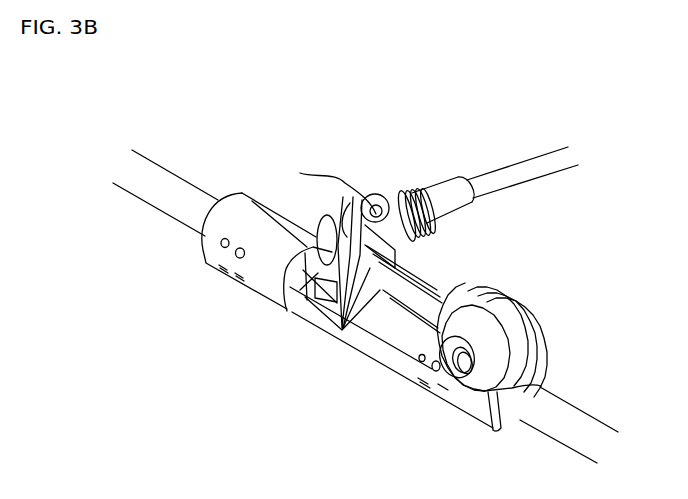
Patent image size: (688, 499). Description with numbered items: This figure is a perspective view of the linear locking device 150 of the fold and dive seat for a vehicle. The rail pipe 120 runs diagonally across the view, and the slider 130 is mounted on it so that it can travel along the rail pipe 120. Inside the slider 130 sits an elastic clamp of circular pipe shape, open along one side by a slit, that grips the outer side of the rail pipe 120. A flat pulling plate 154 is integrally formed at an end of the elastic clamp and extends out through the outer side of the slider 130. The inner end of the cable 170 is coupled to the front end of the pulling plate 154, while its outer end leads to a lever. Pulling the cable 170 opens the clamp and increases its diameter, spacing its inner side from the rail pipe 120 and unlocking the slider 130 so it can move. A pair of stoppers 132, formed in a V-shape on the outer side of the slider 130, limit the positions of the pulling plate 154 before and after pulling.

The rail pipe 120 is at (172, 185).
The slider 130 is at (263, 188).
The stoppers 132 is at (316, 236).
The linear locking device 150 is at (290, 312).
The pulling plate 154 is at (309, 300).
The cable 170 is at (418, 248).